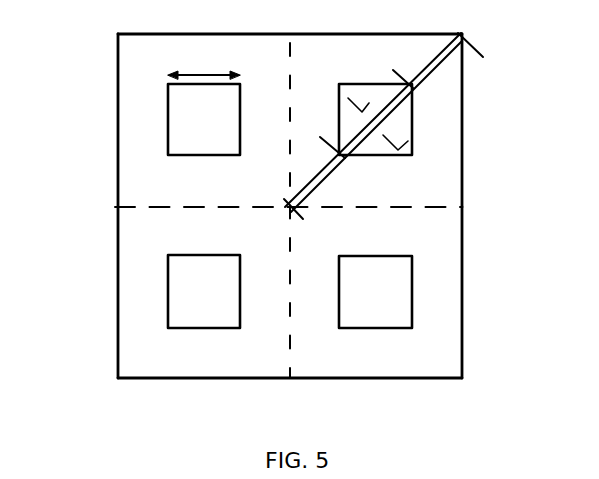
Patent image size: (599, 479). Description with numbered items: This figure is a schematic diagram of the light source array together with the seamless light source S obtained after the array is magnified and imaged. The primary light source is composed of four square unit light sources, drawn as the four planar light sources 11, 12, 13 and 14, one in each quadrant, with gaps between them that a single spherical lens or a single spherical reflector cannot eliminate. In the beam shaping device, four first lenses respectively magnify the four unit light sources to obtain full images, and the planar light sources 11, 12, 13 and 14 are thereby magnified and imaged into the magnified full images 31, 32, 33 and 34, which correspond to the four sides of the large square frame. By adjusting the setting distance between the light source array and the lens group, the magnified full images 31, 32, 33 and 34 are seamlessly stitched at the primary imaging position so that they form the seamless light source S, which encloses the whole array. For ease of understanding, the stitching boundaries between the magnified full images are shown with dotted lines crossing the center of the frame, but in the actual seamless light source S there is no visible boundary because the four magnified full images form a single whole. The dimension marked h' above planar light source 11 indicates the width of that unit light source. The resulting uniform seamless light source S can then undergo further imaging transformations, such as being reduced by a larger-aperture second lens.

The seamless light source S is at (138, 96).
The planar light source 11 is at (208, 148).
The planar light source 12 is at (213, 318).
The planar light source 13 is at (385, 160).
The planar light source 14 is at (390, 318).
The magnified full image 31 is at (123, 157).
The magnified full image 32 is at (132, 298).
The magnified full image 33 is at (458, 132).
The magnified full image 34 is at (448, 313).
The pixel region width h' is at (204, 62).